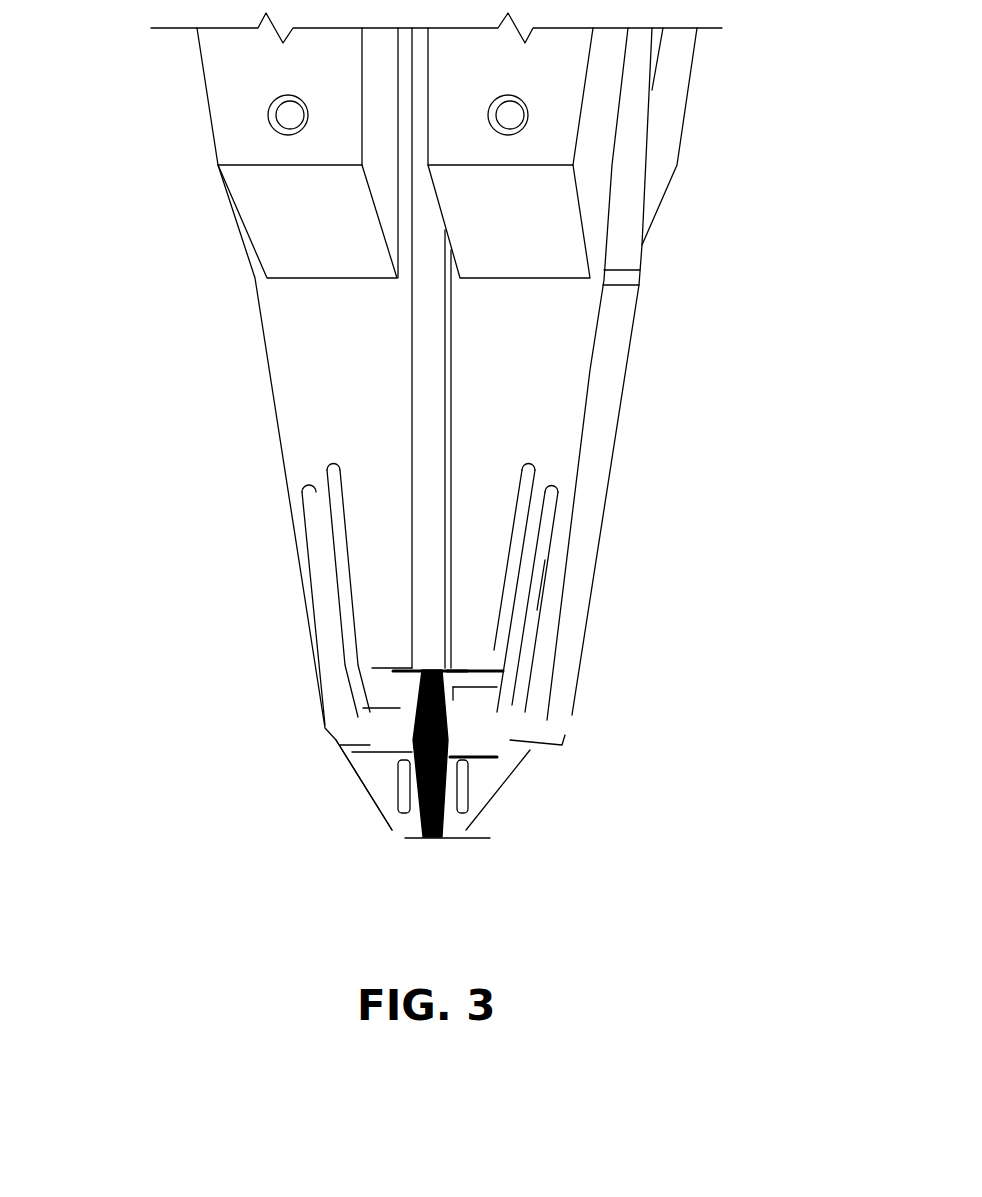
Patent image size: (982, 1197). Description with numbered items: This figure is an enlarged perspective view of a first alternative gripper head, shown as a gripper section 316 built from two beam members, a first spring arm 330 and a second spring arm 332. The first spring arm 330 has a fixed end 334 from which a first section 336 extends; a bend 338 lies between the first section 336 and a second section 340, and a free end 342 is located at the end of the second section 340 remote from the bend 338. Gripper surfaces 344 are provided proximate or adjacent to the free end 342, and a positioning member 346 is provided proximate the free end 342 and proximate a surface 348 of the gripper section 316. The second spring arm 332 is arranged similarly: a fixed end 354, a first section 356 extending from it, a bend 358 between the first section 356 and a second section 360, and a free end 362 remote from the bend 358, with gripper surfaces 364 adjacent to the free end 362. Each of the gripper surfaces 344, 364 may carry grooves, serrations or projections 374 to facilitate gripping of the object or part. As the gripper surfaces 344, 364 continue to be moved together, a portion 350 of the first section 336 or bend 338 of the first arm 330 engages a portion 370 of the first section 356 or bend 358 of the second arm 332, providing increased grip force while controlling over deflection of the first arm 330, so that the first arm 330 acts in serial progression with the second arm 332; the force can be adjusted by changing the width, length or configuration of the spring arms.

The gripper section 316 is at (155, 268).
The first spring arm 330 is at (555, 526).
The second spring arm 332 is at (580, 646).
The fixed end 334 is at (538, 478).
The first section 336 is at (517, 612).
The bend 338 is at (450, 755).
The second section 340 is at (393, 810).
The free end 342 is at (410, 777).
The gripper surfaces 344 is at (400, 753).
The positioning member 346 is at (393, 697).
The surface 348 is at (385, 678).
The portion 350 is at (402, 710).
The fixed end 354 is at (566, 493).
The first section 356 is at (553, 573).
The bend 358 is at (548, 748).
The second section 360 is at (518, 798).
The free end 362 is at (470, 840).
The gripper surfaces 364 is at (427, 840).
The portion 370 is at (378, 748).
The grooves, serrations or projections 374 is at (413, 807).